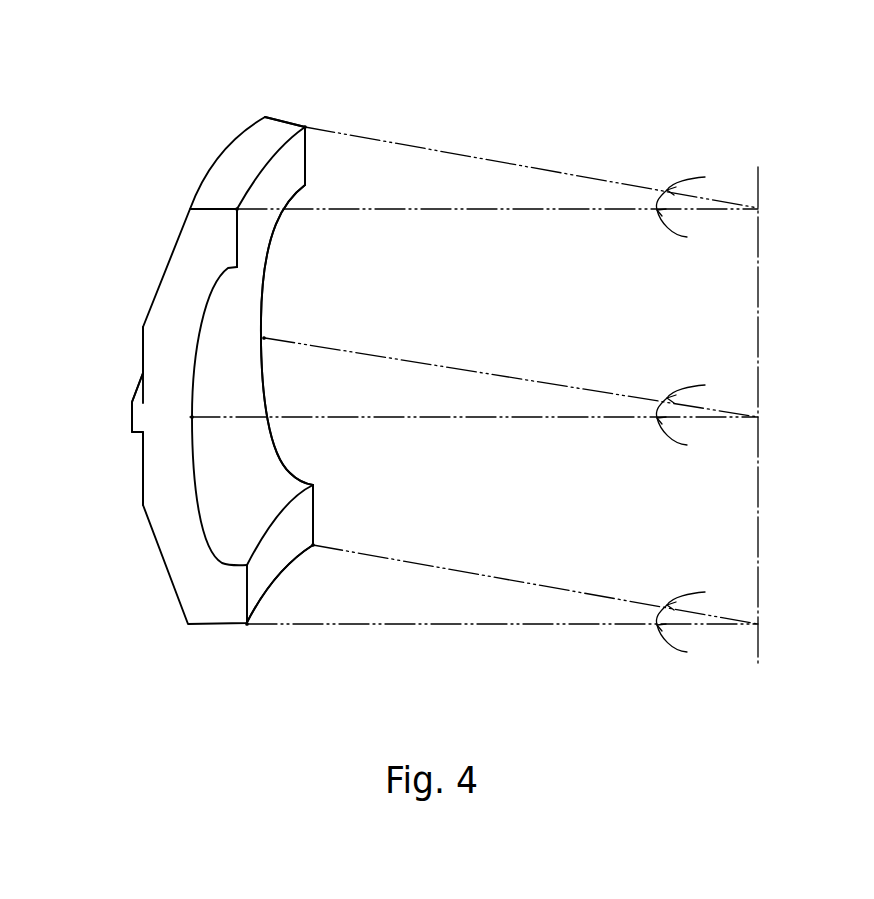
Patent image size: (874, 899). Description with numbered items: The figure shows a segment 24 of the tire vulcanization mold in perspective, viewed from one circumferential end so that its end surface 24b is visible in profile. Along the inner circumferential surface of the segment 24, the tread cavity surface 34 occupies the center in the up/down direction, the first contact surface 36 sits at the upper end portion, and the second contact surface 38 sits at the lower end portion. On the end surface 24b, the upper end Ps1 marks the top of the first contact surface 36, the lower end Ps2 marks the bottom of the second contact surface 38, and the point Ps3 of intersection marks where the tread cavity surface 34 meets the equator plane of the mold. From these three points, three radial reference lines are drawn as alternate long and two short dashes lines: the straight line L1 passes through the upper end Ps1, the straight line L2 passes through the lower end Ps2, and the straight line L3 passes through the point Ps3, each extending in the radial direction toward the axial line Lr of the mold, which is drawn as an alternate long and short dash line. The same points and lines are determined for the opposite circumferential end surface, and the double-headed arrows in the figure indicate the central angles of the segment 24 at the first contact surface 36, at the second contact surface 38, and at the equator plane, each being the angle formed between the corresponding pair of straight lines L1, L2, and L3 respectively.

The segment 24 is at (172, 255).
The end surface 24b is at (163, 343).
The tread cavity surface 34 is at (242, 300).
The first contact surface 36 is at (292, 165).
The second contact surface 38 is at (298, 518).
The upper end Ps1 is at (305, 127).
The lower end Ps2 is at (312, 545).
The point of intersection Ps3 is at (262, 337).
The straight line L1 is at (535, 168).
The straight line L2 is at (523, 580).
The straight line L3 is at (533, 360).
The axial line Lr is at (760, 597).